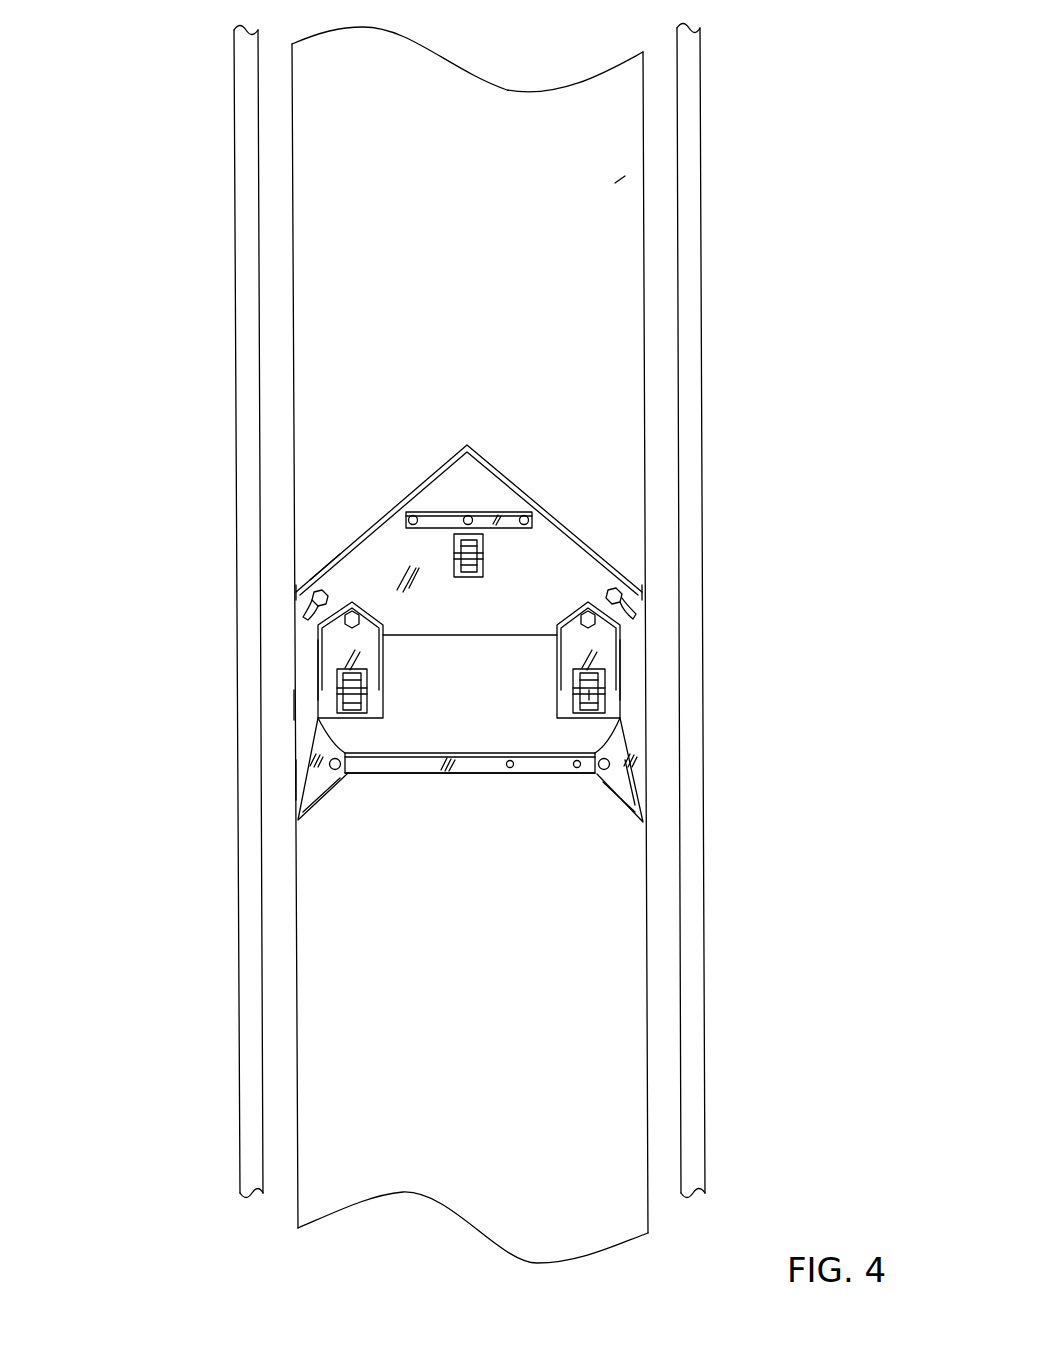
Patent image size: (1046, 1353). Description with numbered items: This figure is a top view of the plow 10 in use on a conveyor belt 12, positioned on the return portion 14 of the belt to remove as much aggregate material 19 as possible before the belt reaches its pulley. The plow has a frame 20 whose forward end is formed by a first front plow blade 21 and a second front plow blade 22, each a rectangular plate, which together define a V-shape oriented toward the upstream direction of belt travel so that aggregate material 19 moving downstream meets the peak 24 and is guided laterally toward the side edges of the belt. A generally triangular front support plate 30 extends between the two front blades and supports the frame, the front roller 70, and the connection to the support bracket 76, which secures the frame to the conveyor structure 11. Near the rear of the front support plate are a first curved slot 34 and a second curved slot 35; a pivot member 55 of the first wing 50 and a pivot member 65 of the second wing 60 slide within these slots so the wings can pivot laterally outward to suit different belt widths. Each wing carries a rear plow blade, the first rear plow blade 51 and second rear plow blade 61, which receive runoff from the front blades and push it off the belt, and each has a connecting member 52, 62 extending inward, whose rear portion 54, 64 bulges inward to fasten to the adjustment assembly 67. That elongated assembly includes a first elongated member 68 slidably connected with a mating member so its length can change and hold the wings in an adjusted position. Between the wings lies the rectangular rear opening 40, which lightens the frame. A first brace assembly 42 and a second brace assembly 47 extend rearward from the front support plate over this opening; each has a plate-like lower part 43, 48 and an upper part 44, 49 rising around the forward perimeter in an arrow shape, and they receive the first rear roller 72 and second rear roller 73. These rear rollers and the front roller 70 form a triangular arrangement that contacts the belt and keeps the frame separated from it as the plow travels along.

The plow 10 is at (70, 61).
The conveyor structure 11 is at (395, 611).
The conveyor belt 12 is at (467, 46).
The return portion 14 is at (464, 667).
The aggregate material 19 is at (735, 172).
The frame 20 is at (690, 393).
The first front plow blade 21 is at (557, 522).
The second front plow blade 22 is at (276, 492).
The peak 24 is at (292, 382).
The front support plate 30 is at (608, 572).
The first curved slot 34 is at (722, 629).
The second curved slot 35 is at (204, 596).
The rear opening 40 is at (491, 877).
The first brace assembly 42 is at (524, 660).
The lower part 43 is at (716, 710).
The upper part 44 is at (726, 670).
The second brace assembly 47 is at (470, 680).
The lower part 48 is at (204, 670).
The upper part 49 is at (231, 660).
The first wing 50 is at (727, 785).
The first rear plow blade 51 is at (590, 766).
The connecting member 52 is at (573, 833).
The rear portion 54 is at (582, 863).
The pivot member 55 is at (712, 603).
The second wing 60 is at (189, 784).
The second rear plow blade 61 is at (201, 718).
The connecting member 62 is at (398, 915).
The rear portion 64 is at (404, 960).
The pivot member 65 is at (209, 566).
The adjustment assembly 67 is at (542, 887).
The first elongated member 68 is at (470, 911).
The front roller 70 is at (636, 531).
The first rear roller 72 is at (708, 714).
The second rear roller 73 is at (234, 691).
The support bracket 76 is at (612, 489).